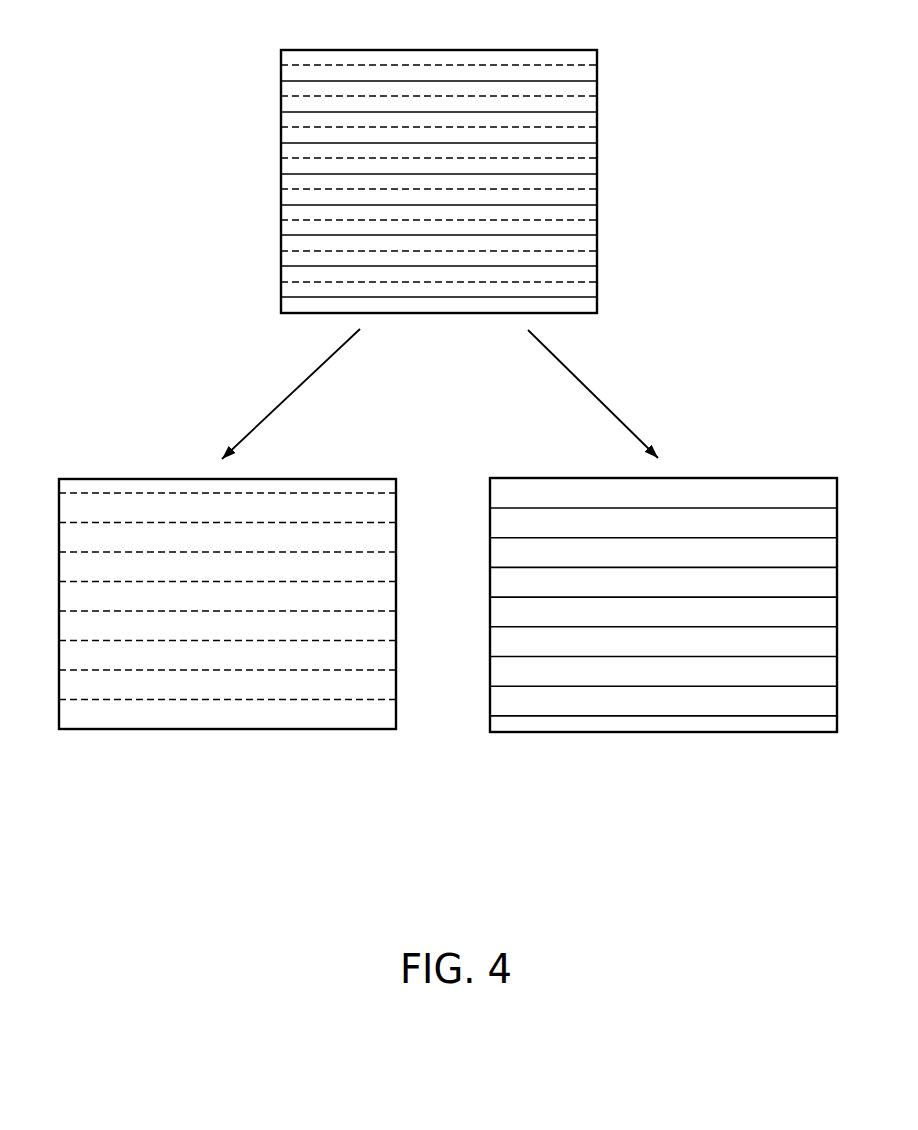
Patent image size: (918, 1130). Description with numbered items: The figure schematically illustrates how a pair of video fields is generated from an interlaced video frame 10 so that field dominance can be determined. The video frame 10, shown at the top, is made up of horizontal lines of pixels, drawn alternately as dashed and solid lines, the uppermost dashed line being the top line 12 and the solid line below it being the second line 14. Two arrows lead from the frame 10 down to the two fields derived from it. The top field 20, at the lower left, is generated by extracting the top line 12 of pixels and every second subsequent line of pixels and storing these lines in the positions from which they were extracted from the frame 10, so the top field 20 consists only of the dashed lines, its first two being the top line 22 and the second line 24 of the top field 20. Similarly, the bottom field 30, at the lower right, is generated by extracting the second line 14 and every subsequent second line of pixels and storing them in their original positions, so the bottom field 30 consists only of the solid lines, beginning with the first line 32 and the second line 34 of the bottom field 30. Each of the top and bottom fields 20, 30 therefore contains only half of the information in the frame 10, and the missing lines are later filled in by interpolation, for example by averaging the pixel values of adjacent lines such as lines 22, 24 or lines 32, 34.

The video frame 10 is at (471, 166).
The top line 12 is at (282, 65).
The second line 14 is at (282, 80).
The top field 20 is at (209, 622).
The top line of the top field 22 is at (73, 493).
The second line of the top field 24 is at (73, 523).
The bottom field 30 is at (639, 646).
The first line of the bottom field 32 is at (507, 508).
The second line of the bottom field 34 is at (507, 538).